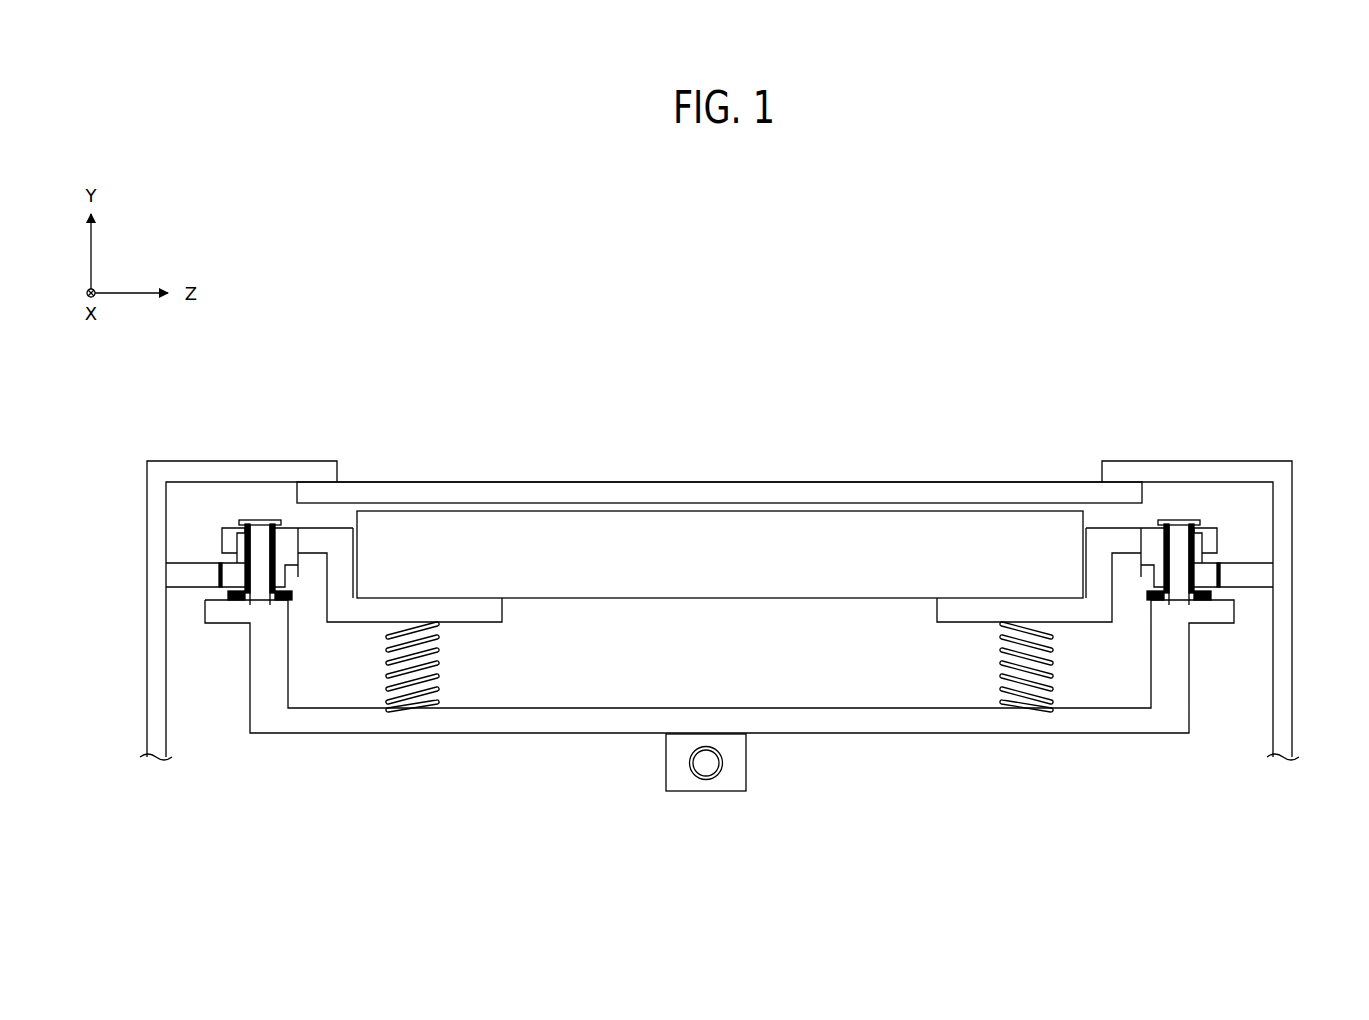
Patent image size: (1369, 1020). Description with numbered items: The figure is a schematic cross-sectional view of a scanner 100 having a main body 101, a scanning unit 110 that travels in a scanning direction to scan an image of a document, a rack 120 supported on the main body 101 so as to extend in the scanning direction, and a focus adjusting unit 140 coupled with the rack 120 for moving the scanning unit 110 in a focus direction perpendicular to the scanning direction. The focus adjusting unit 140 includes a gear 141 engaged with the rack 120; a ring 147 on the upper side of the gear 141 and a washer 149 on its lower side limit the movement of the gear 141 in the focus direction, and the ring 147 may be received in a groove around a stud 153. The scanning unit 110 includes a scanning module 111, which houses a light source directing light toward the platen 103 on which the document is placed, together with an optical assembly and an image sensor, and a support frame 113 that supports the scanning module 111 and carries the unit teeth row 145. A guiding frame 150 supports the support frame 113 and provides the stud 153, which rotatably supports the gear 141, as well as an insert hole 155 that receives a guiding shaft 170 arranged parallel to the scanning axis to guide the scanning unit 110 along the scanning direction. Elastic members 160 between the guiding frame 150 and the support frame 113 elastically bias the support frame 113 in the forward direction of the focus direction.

The scanner 100 is at (1047, 297).
The main body 101 is at (147, 652).
The platen 103 is at (623, 487).
The scanning unit 110 is at (815, 497).
The scanning module 111 is at (688, 530).
The support frame 113 is at (493, 625).
The rack 120 is at (1262, 578).
The focus adjusting unit 140 is at (358, 388).
The gear 141 is at (290, 577).
The unit teeth row 145 is at (283, 528).
The ring 147 is at (241, 523).
The washer 149 is at (240, 600).
The guiding frame 150 is at (843, 722).
The stud 153 is at (262, 528).
The insert hole 155 is at (702, 767).
The elastic member 160 is at (425, 700).
The guiding shaft 170 is at (723, 765).